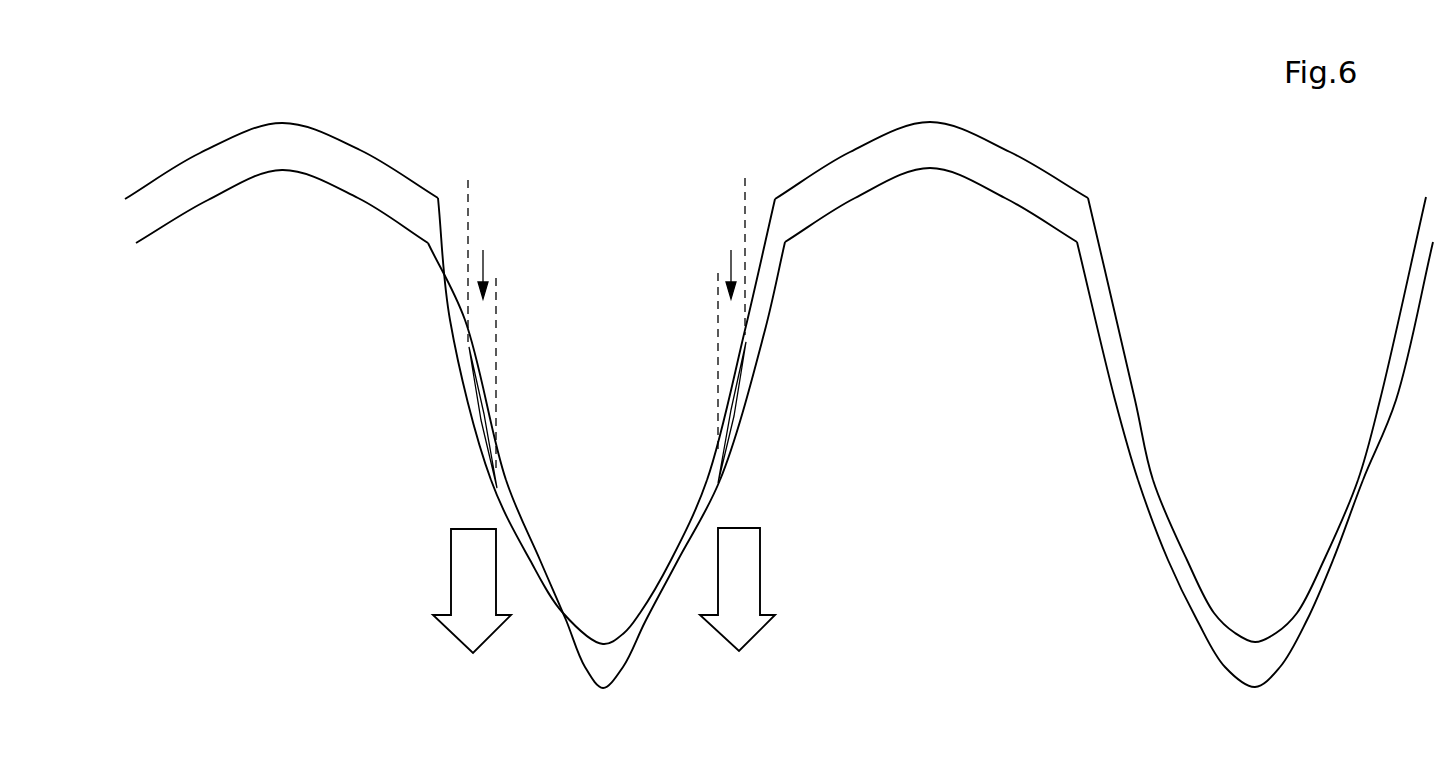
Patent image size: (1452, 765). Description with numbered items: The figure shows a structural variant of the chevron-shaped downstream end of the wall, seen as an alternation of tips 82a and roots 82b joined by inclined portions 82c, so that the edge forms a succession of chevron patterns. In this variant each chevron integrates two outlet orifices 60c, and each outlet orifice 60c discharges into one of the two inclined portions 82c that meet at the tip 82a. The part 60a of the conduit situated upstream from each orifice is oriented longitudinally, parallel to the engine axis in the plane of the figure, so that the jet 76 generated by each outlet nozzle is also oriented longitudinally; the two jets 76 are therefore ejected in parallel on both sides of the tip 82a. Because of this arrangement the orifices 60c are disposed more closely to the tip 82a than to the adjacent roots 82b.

The tip 82a is at (653, 647).
The root 82b is at (283, 168).
The inclined portion 82c is at (472, 430).
The part of the conduit upstream from the orifice 60a is at (497, 318).
The outlet orifice 60c is at (493, 460).
The jet 76 is at (455, 567).